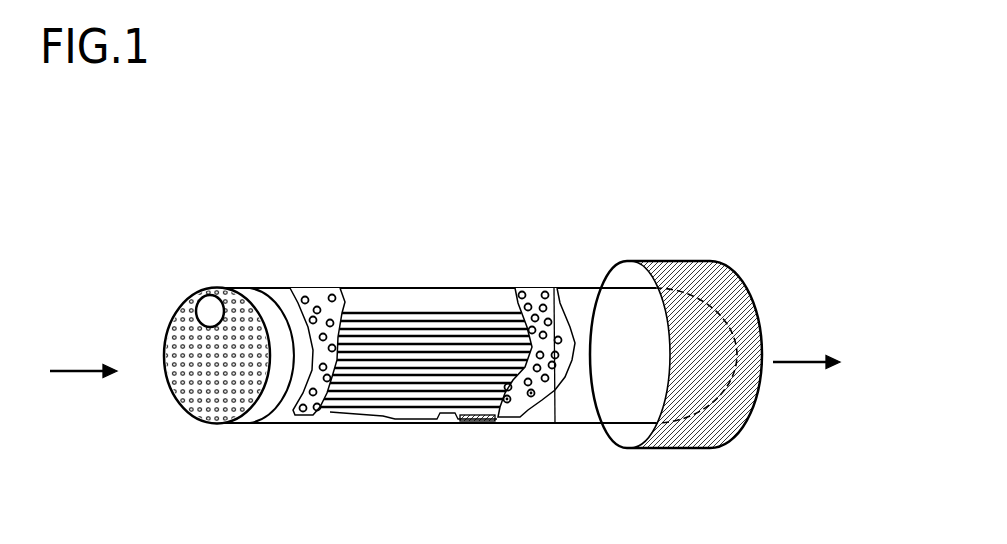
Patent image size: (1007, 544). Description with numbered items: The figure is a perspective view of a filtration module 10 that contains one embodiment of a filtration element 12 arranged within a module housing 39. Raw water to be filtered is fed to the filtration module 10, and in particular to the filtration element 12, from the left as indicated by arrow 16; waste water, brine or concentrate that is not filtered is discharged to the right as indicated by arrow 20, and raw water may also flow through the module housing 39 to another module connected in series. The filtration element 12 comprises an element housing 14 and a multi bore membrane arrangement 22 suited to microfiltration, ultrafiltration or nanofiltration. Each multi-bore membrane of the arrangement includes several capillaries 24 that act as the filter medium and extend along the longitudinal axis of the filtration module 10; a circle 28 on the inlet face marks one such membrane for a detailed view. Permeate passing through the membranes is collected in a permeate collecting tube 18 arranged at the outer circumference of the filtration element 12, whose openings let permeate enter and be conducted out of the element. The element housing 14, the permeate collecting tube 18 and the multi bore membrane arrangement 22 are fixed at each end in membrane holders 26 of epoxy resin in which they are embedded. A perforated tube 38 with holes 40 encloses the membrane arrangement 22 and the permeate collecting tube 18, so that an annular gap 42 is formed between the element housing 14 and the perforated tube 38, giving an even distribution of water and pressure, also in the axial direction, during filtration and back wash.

The filtration module 10 is at (678, 340).
The filtration element 12 is at (436, 311).
The element housing 14 is at (280, 292).
The arrow 16 is at (76, 370).
The permeate collecting tube 18 is at (412, 300).
The arrow 20 is at (808, 362).
The multi bore membrane arrangement 22 is at (217, 361).
The capillaries 24 is at (250, 312).
The membrane holders 26 is at (267, 408).
The circle 28 is at (180, 407).
The perforated tube 38 is at (328, 295).
The module housing 39 is at (690, 437).
The holes 40 is at (531, 394).
The annular gap 42 is at (555, 423).